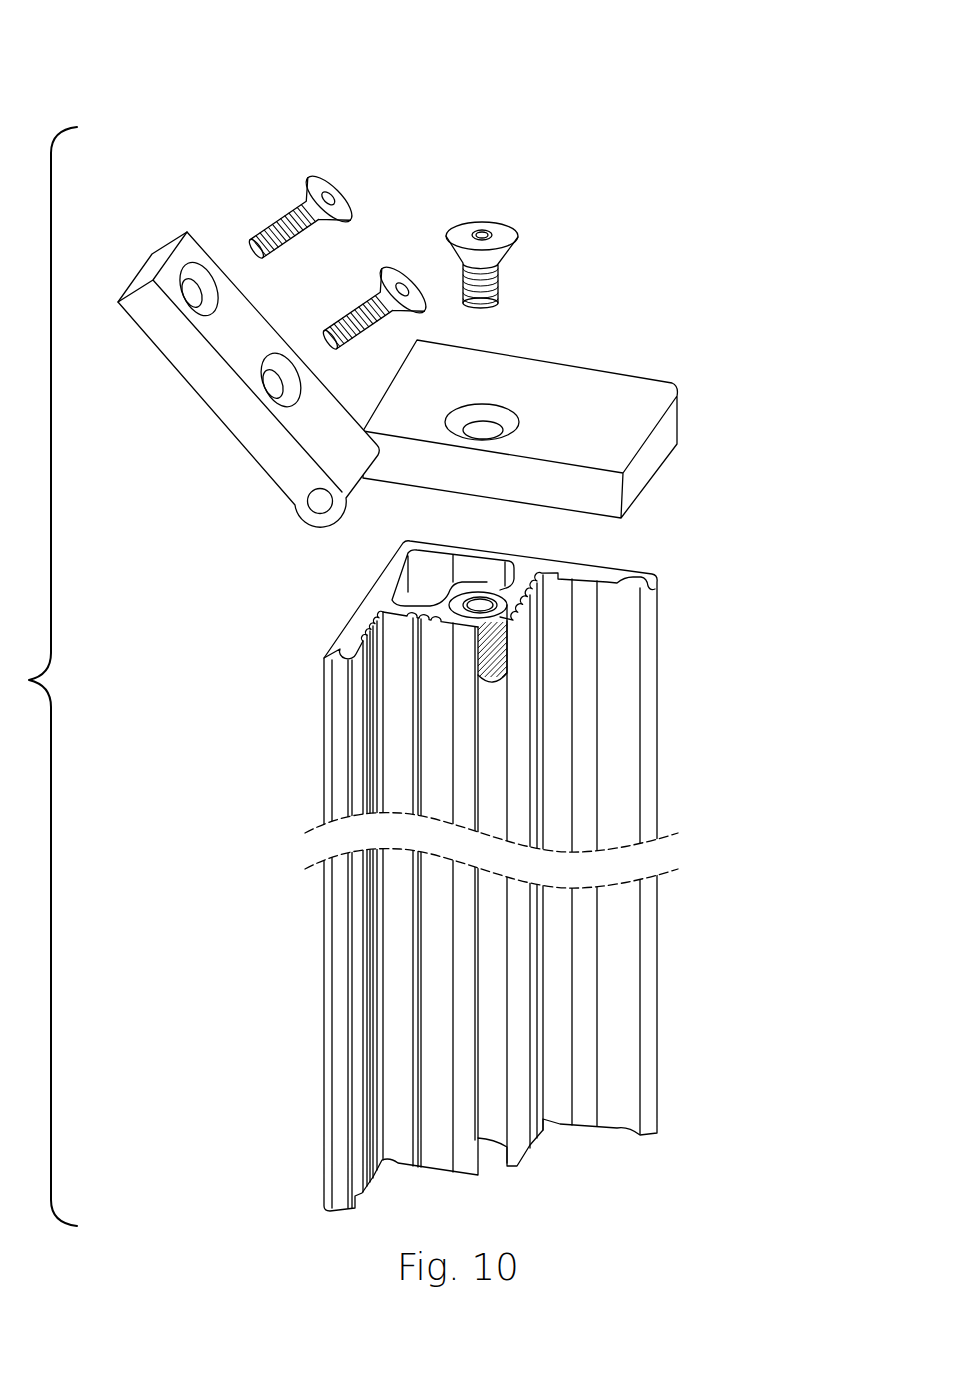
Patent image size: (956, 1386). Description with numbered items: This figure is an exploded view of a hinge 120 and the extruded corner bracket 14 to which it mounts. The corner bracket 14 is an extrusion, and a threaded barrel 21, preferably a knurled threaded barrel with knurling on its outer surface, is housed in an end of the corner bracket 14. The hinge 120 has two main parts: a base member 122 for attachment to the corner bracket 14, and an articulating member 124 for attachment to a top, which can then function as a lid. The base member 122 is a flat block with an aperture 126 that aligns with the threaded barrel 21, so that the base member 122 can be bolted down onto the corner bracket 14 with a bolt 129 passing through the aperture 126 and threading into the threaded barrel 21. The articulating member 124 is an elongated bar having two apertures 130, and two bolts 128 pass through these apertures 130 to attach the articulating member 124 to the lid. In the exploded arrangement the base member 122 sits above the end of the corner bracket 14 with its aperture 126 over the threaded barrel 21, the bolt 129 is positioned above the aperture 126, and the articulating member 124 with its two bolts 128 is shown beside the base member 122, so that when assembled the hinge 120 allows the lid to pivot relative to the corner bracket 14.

The hinge 120 is at (548, 110).
The extruded corner bracket 14 is at (543, 870).
The threaded barrel 21 is at (494, 643).
The base member 122 is at (549, 406).
The aperture 126 is at (486, 434).
The articulating member 124 is at (248, 342).
The apertures 130 is at (280, 384).
The bolts 128 is at (410, 272).
The bolt 129 is at (503, 232).